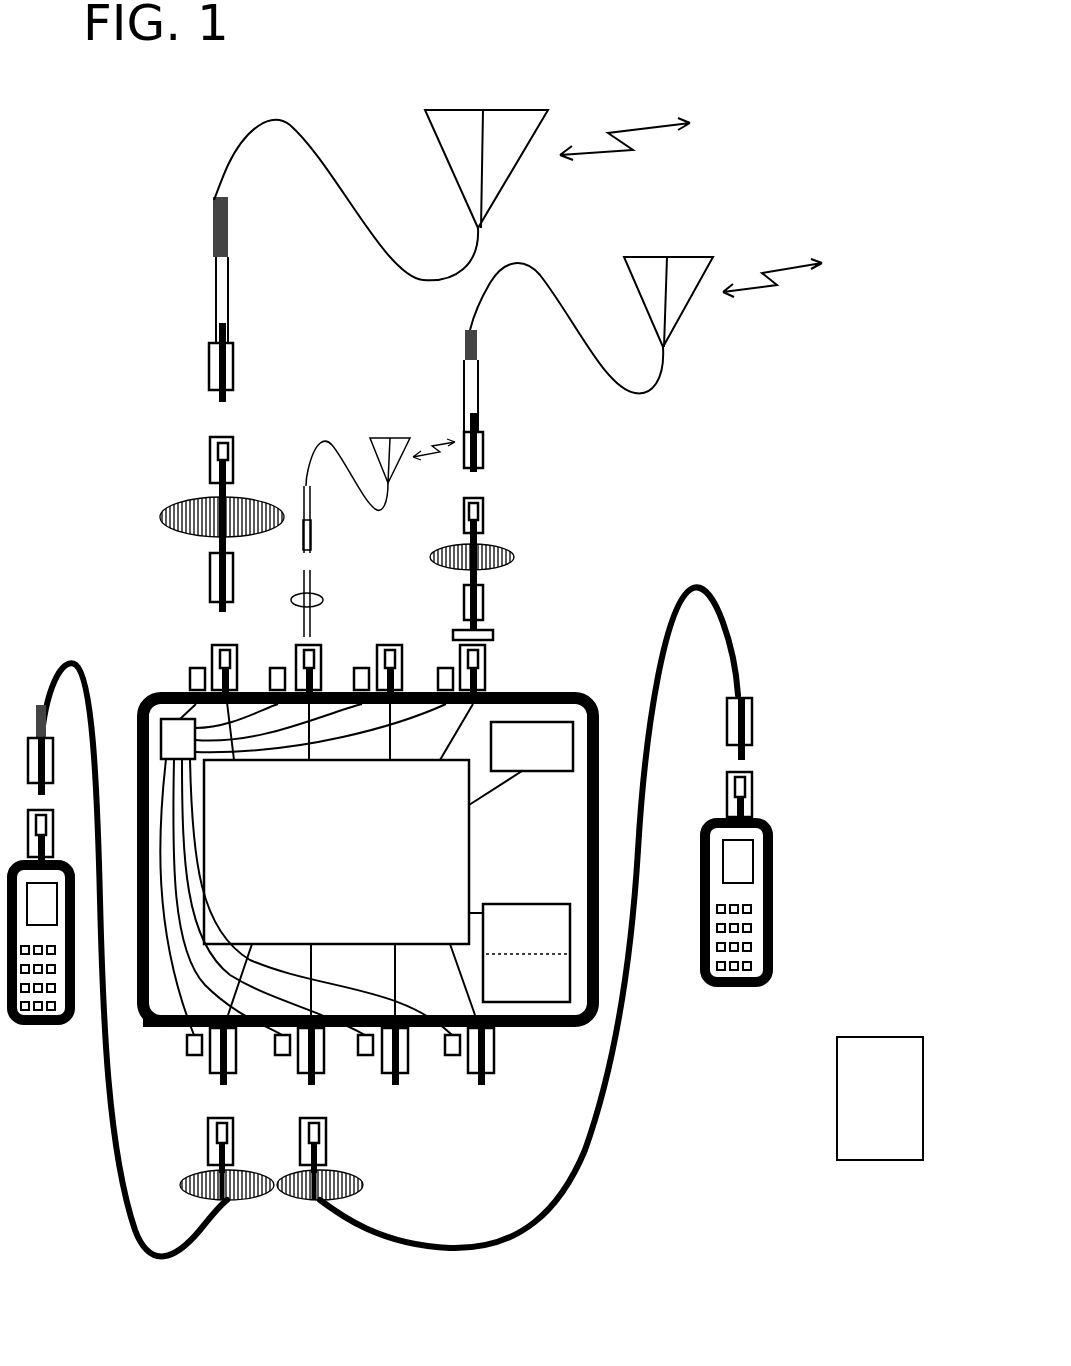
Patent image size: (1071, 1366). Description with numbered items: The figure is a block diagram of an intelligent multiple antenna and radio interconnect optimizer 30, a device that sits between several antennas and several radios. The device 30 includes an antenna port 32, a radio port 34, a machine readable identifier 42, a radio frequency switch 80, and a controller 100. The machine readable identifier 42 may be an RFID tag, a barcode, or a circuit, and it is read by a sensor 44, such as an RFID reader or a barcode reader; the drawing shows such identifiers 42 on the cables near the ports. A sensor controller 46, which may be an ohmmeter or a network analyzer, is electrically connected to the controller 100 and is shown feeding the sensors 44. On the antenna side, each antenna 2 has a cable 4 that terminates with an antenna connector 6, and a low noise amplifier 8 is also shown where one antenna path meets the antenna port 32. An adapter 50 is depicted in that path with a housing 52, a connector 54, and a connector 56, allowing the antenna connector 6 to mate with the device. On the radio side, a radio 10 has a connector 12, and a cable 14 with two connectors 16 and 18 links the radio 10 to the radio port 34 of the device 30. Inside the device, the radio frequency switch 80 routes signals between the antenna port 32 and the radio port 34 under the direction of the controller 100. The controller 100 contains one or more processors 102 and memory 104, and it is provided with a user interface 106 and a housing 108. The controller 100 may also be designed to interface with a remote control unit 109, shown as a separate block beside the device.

The antenna 2 is at (508, 110).
The cable 4 is at (635, 393).
The antenna connector 6 is at (208, 372).
The low noise amplifier 8 is at (453, 630).
The radio 10 is at (37, 1025).
The connector 12 is at (752, 795).
The cable 14 is at (725, 638).
The connector 16 is at (752, 717).
The connector 18 is at (327, 1132).
The intelligent multiple antenna and radio interconnect optimizer 30 is at (618, 605).
The antenna port 32 is at (382, 643).
The radio port 34 is at (493, 1052).
The machine readable identifier 42 is at (160, 501).
The sensor 44 is at (195, 668).
The sensor controller 46 is at (165, 720).
The adapter 50 is at (535, 551).
The housing 52 is at (465, 538).
The connector 54 is at (483, 525).
The connector 56 is at (483, 603).
The radio frequency switch 80 is at (352, 845).
The controller 100 is at (573, 977).
The processors 102 is at (548, 986).
The memory 104 is at (548, 938).
The user interface 106 is at (541, 723).
The housing 108 is at (562, 1048).
The remote control unit 109 is at (825, 1136).